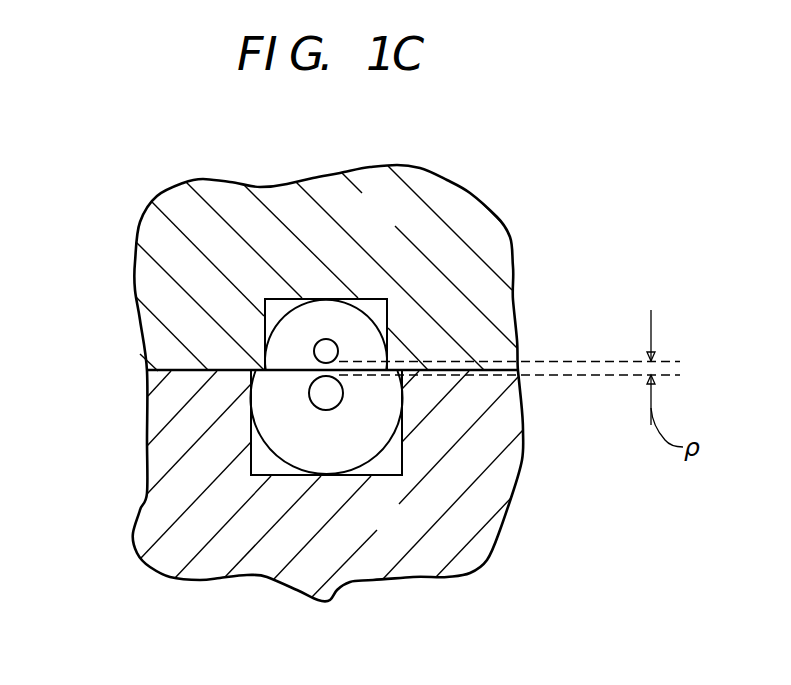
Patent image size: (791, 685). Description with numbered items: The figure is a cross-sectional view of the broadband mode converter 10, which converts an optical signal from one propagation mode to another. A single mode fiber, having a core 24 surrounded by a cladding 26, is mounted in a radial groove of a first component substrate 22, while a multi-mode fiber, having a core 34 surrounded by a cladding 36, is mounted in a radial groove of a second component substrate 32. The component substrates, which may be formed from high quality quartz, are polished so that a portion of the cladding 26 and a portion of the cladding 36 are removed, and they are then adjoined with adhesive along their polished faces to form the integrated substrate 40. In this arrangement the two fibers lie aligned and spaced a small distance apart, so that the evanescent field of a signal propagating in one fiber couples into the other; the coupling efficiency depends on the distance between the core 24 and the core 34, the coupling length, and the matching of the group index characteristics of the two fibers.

The broadband mode converter 10 is at (130, 182).
The first component substrate 22 is at (390, 244).
The core 24 is at (338, 348).
The cladding 26 is at (292, 337).
The second component substrate 32 is at (412, 541).
The core 34 is at (340, 403).
The cladding 36 is at (283, 397).
The integrated substrate 40 is at (147, 466).